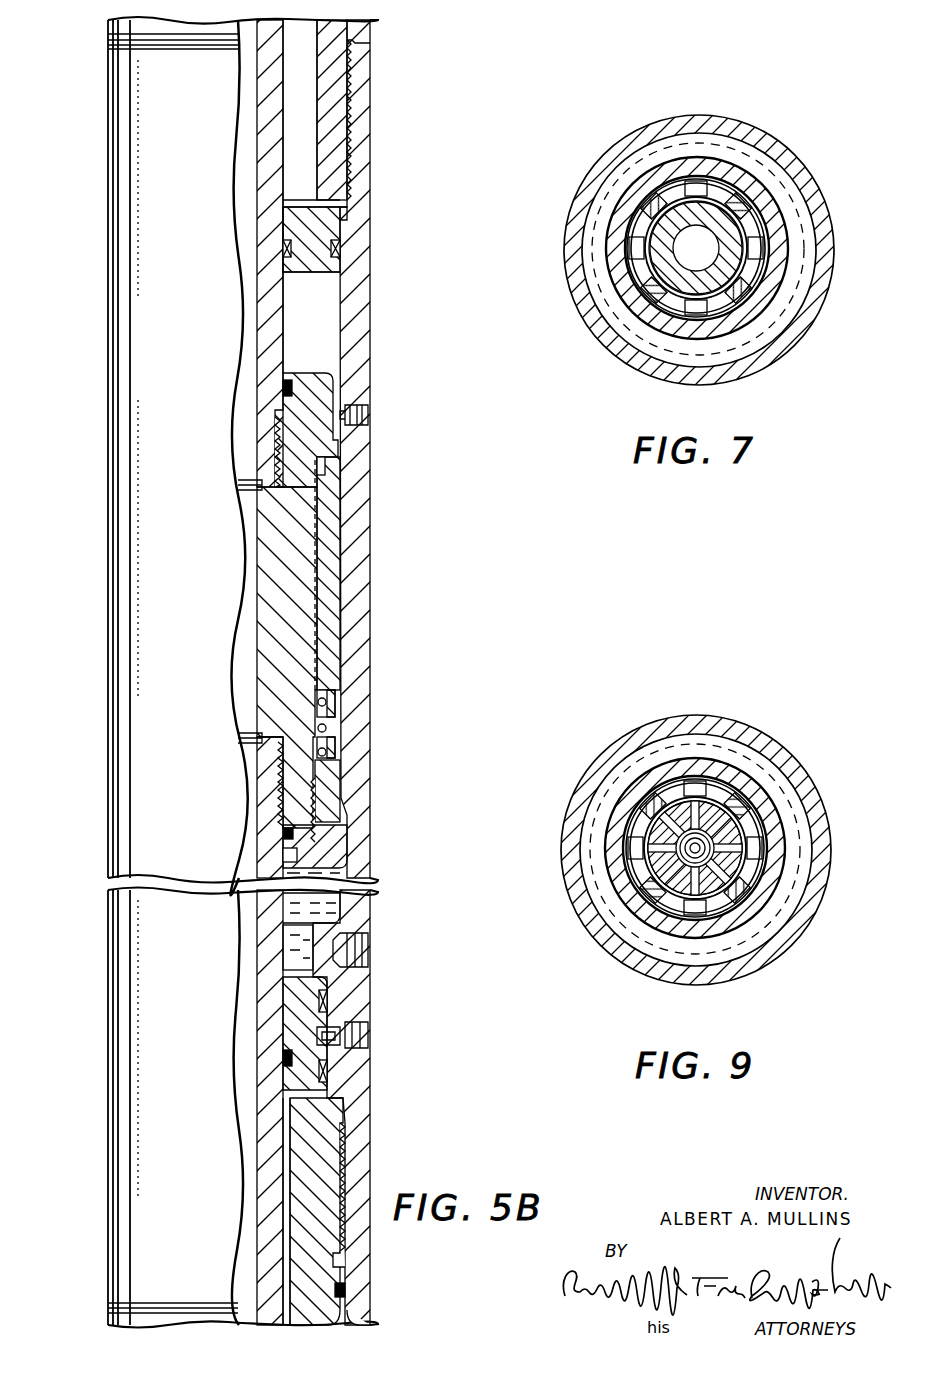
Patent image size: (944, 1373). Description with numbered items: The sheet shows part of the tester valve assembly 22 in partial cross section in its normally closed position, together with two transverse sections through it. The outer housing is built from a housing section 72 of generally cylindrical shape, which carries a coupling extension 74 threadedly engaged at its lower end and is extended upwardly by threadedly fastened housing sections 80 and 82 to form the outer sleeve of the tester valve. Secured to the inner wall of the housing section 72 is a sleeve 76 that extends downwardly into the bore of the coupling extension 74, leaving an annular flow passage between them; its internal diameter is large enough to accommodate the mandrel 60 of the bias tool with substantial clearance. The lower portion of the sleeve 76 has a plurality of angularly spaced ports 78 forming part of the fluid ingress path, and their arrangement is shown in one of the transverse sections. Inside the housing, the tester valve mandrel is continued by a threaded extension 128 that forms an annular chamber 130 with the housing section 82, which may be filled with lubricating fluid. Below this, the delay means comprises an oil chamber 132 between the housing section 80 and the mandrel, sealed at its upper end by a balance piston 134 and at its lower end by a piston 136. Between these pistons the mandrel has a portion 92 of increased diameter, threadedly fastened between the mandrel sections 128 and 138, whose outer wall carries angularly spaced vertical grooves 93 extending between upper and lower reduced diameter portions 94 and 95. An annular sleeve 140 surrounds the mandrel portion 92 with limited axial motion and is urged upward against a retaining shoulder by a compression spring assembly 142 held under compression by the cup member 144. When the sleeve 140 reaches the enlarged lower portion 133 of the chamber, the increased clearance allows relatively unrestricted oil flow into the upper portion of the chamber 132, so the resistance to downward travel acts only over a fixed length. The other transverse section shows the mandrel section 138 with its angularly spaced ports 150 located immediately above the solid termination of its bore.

In FIG. 5B, the tester valve assembly 22 is at (100, 806).
In FIG. 7, the mandrel 60 is at (680, 283).
In FIG. 5B, the housing section 72 is at (313, 1157).
In FIG. 7, the housing section 72 is at (757, 138).
In FIG. 9, the housing section 72 is at (780, 757).
In FIG. 7, the coupling extension 74 is at (753, 168).
In FIG. 9, the coupling extension 74 is at (775, 795).
In FIG. 7, the sleeve 76 is at (753, 223).
In FIG. 9, the sleeve 76 is at (747, 867).
In FIG. 7, the ports 78 is at (647, 292).
In FIG. 9, the ports 78 is at (735, 897).
In FIG. 5B, the housing section 80 is at (363, 741).
In FIG. 5B, the housing section 82 is at (335, 105).
In FIG. 5B, the mandrel portion of increased diameter 92 is at (320, 393).
In FIG. 5B, the vertical grooves 93 is at (320, 540).
In FIG. 5B, the upper reduced diameter portion 94 is at (320, 473).
In FIG. 5B, the lower reduced diameter portion 95 is at (318, 665).
In FIG. 5B, the threaded extension 128 is at (275, 135).
In FIG. 5B, the annular chamber 130 is at (305, 162).
In FIG. 5B, the oil chamber 132 is at (325, 320).
In FIG. 5B, the enlarged lower portion of the chamber 133 is at (333, 907).
In FIG. 5B, the balance piston 134 is at (330, 230).
In FIG. 5B, the piston 136 is at (330, 1017).
In FIG. 5B, the mandrel section 138 is at (273, 823).
In FIG. 9, the mandrel section 138 is at (727, 853).
In FIG. 5B, the annular sleeve 140 is at (330, 577).
In FIG. 5B, the compression spring assembly 142 is at (327, 707).
In FIG. 5B, the cup member 144 is at (330, 793).
In FIG. 9, the ports 150 is at (721, 815).